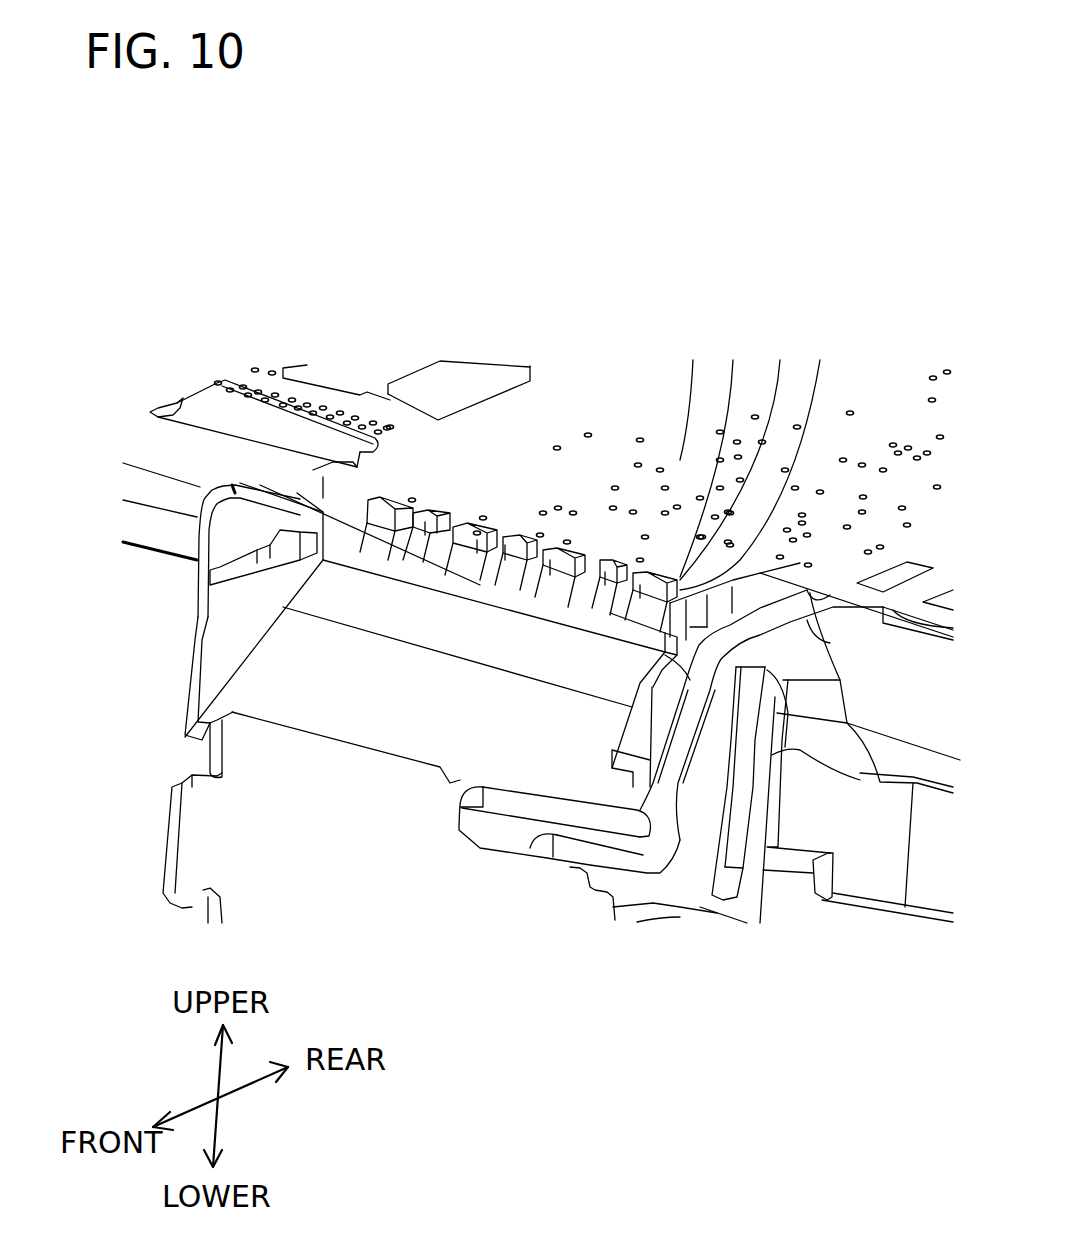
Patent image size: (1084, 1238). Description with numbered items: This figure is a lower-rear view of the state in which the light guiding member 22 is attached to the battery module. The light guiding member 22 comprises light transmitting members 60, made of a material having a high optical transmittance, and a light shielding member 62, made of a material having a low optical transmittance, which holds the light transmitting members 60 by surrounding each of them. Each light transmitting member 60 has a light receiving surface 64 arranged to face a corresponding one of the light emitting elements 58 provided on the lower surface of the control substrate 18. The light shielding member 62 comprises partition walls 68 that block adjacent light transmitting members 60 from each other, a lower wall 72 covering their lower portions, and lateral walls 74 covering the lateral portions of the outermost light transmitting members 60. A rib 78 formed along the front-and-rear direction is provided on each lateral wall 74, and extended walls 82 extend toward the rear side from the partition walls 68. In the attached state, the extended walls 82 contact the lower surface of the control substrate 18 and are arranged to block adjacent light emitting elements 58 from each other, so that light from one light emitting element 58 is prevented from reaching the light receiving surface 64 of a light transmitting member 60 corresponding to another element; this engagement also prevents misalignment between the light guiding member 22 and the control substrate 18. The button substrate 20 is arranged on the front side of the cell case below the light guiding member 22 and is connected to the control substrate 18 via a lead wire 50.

The control substrate 18 is at (510, 420).
The button substrate 20 is at (200, 822).
The light guiding member 22 is at (183, 677).
The lead wire 50 is at (510, 803).
The light emitting elements 58 is at (380, 497).
The light transmitting members 60 is at (353, 513).
The light receiving surface 64 is at (520, 546).
The light shielding member 62 is at (313, 697).
The partition walls 68 is at (452, 528).
The lower wall 72 is at (417, 727).
The lateral walls 74 is at (337, 537).
The rib 78 is at (223, 563).
The extended walls 82 is at (452, 513).